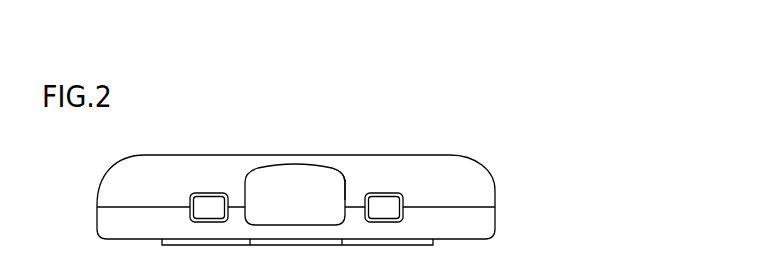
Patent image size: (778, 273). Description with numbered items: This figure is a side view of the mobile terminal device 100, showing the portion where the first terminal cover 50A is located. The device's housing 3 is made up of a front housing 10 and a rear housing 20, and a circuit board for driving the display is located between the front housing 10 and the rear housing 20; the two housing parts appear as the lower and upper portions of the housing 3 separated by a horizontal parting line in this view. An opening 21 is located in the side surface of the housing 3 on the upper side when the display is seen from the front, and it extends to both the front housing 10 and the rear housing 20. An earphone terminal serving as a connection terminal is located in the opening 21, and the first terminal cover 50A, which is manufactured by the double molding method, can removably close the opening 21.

The mobile terminal device 100 is at (494, 131).
The housing 3 is at (547, 167).
The rear housing 20 is at (468, 181).
The front housing 10 is at (478, 220).
The first terminal cover 50A is at (277, 182).
The opening 21 is at (337, 185).